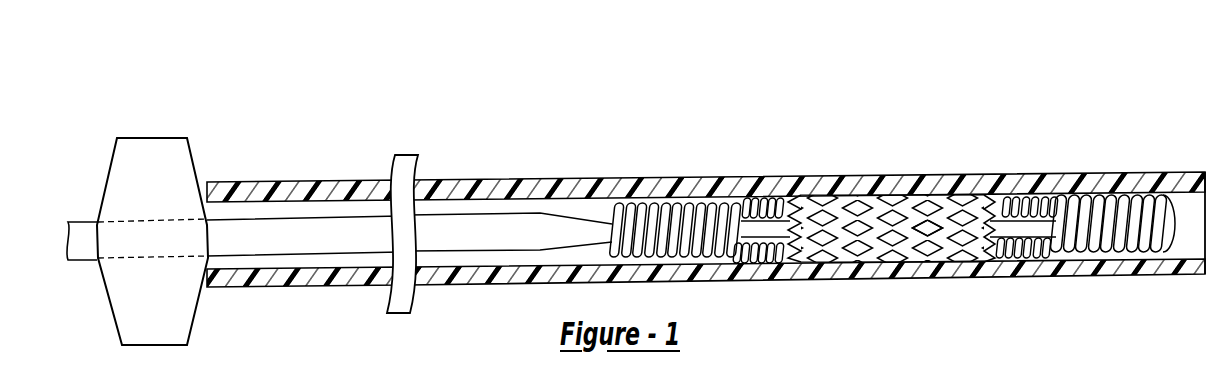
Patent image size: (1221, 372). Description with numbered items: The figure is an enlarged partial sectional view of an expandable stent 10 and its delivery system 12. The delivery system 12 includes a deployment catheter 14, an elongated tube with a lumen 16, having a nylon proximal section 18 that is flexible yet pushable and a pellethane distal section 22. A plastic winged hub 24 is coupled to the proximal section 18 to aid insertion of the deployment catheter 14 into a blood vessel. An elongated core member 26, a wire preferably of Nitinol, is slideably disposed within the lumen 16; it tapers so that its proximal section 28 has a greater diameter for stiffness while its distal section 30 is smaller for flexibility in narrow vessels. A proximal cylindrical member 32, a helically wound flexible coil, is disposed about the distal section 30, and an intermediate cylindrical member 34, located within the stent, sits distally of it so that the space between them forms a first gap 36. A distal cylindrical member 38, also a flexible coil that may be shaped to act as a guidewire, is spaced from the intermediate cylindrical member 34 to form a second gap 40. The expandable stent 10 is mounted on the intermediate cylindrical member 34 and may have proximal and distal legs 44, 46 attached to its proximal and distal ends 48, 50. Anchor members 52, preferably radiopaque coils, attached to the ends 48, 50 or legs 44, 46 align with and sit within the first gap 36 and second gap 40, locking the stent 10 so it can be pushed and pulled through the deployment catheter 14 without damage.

The expandable stent 10 is at (892, 165).
The delivery system 12 is at (460, 187).
The deployment catheter 14 is at (806, 196).
The lumen 16 is at (635, 164).
The proximal section 18 is at (303, 180).
The distal section 22 is at (1173, 155).
The winged hub 24 is at (137, 209).
The core member 26 is at (510, 164).
The proximal section 28 is at (303, 169).
The distal section 30 is at (1030, 148).
The proximal cylindrical member 32 is at (729, 168).
The intermediate cylindrical member 34 is at (935, 139).
The first gap 36 is at (758, 283).
The distal cylindrical member 38 is at (1112, 152).
The second gap 40 is at (1042, 274).
The proximal legs 44 is at (780, 271).
The distal legs 46 is at (1019, 285).
The proximal end 48 is at (821, 177).
The distal end 50 is at (978, 171).
The anchor members 52 is at (779, 153).